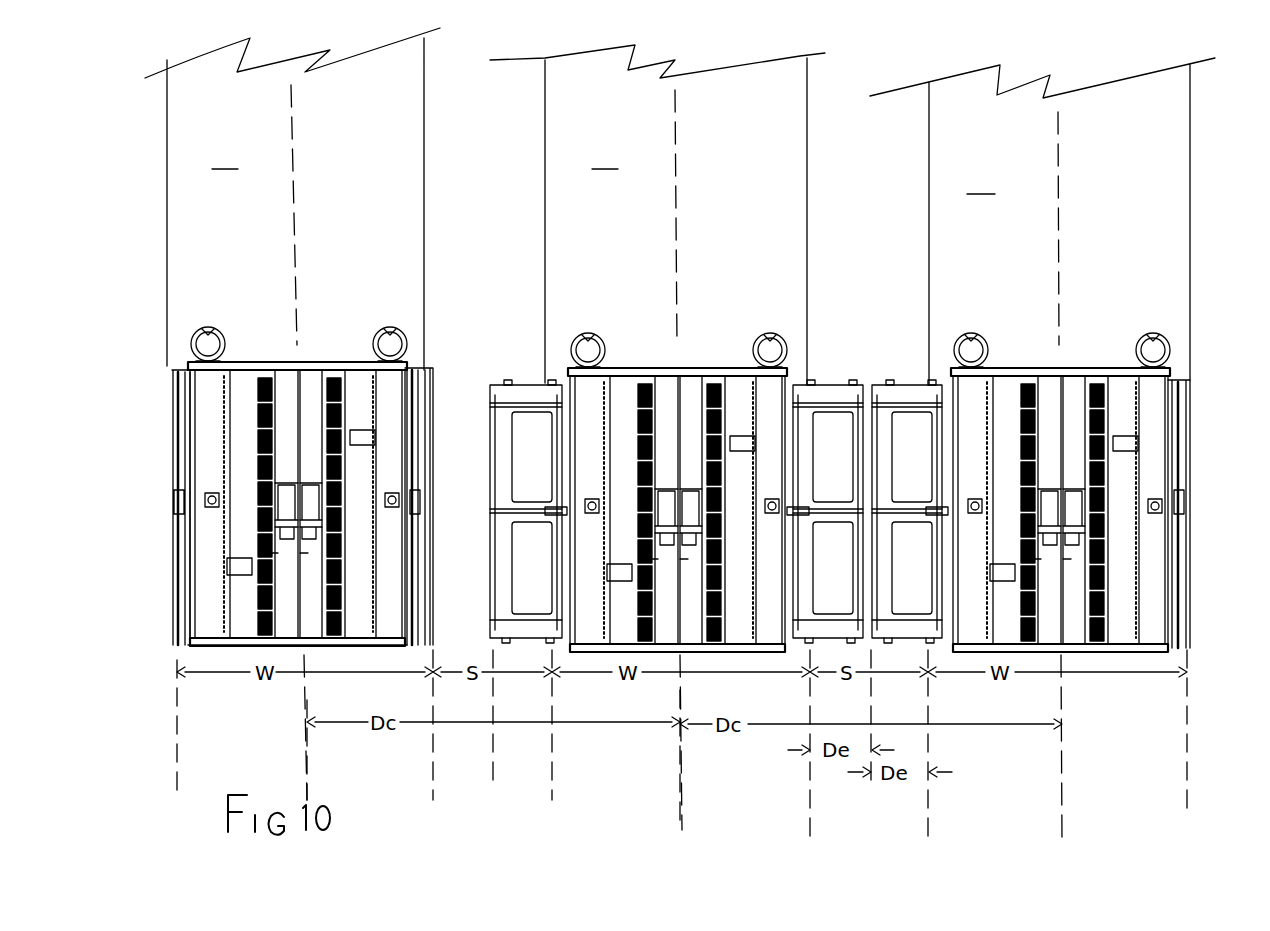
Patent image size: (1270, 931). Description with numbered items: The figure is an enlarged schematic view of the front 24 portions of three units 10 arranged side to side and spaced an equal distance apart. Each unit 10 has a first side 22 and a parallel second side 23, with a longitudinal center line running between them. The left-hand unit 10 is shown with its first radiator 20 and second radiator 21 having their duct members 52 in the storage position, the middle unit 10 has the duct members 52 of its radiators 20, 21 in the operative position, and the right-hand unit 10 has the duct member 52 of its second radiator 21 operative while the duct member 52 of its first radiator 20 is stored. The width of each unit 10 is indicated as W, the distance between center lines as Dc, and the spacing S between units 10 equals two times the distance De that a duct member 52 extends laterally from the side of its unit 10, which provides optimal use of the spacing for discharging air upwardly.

The unit 10 is at (680, 434).
The first radiator 20 is at (679, 459).
The second radiator 21 is at (625, 455).
The first side 22 is at (788, 745).
The second side 23 is at (528, 745).
The front 24 is at (222, 655).
The duct member 52 is at (667, 486).